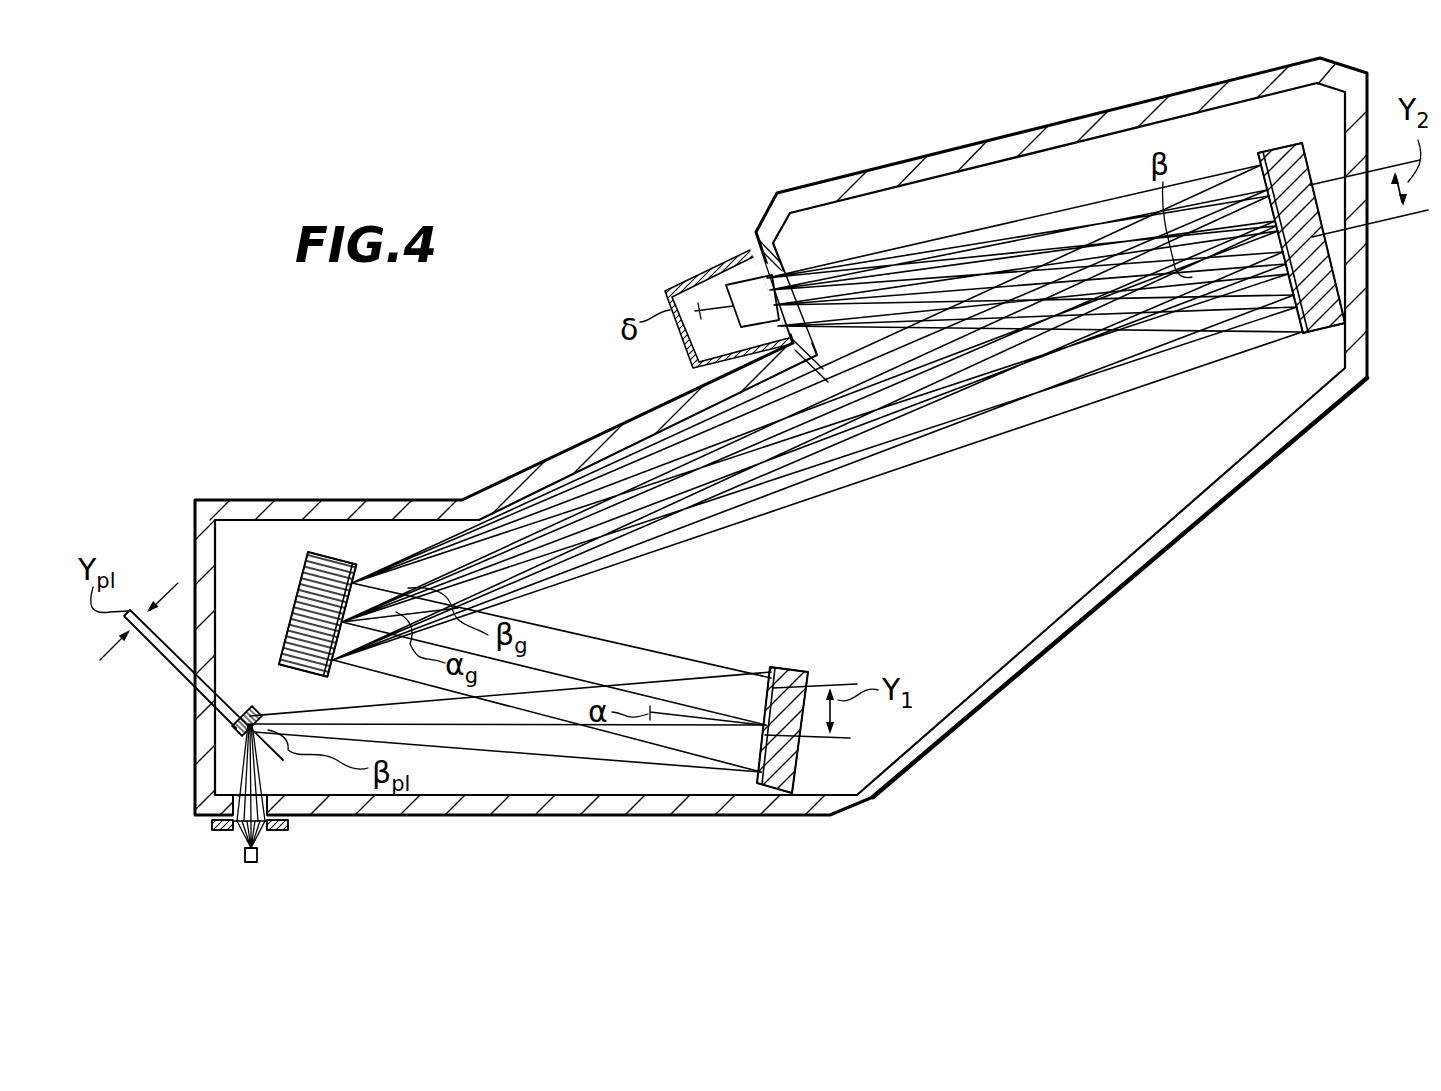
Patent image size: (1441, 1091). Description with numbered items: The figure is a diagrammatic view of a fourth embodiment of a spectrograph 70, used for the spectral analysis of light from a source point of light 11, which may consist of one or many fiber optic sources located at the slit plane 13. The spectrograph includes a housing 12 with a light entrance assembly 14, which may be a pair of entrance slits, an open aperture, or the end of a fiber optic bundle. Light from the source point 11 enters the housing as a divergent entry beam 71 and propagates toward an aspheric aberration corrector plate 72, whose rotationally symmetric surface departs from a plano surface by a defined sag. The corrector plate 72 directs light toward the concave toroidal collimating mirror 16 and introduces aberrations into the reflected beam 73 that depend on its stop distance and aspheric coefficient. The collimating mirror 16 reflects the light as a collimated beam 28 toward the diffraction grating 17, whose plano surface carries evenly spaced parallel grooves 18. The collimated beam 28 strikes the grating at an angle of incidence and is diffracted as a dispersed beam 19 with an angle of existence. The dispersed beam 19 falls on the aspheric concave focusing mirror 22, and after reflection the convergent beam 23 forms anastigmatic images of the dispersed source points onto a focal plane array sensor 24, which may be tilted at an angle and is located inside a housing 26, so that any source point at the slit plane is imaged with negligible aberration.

The source point of light 11 is at (258, 863).
The housing 12 is at (958, 718).
The slit plane 13 is at (290, 823).
The light entrance assembly 14 is at (205, 823).
The collimating mirror 16 is at (800, 762).
The diffraction grating 17 is at (289, 568).
The grooves 18 is at (300, 592).
The dispersed beam 19 is at (790, 496).
The focusing mirror 22 is at (1306, 152).
The convergent beam 23 is at (945, 244).
The focal plane array sensor 24 is at (725, 297).
The housing 26 is at (665, 294).
The collimated beam 28 is at (672, 648).
The spectrograph 70 is at (750, 438).
The divergent entry beam 71 is at (258, 748).
The aspheric aberration corrector plate 72 is at (250, 705).
The reflected beam 73 is at (496, 728).